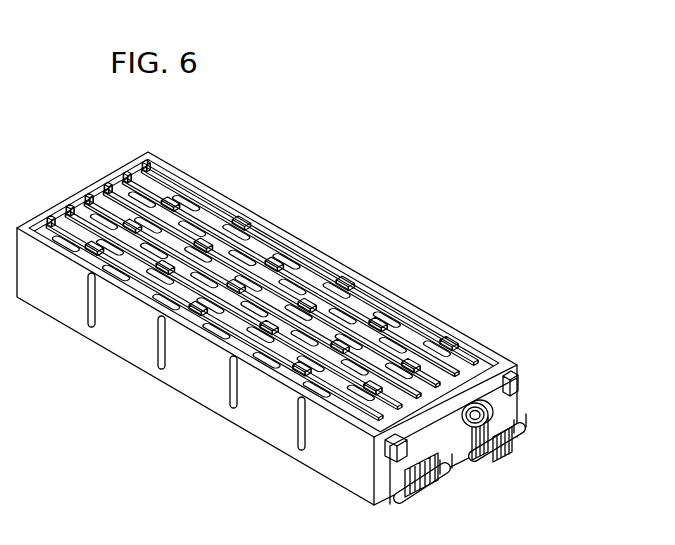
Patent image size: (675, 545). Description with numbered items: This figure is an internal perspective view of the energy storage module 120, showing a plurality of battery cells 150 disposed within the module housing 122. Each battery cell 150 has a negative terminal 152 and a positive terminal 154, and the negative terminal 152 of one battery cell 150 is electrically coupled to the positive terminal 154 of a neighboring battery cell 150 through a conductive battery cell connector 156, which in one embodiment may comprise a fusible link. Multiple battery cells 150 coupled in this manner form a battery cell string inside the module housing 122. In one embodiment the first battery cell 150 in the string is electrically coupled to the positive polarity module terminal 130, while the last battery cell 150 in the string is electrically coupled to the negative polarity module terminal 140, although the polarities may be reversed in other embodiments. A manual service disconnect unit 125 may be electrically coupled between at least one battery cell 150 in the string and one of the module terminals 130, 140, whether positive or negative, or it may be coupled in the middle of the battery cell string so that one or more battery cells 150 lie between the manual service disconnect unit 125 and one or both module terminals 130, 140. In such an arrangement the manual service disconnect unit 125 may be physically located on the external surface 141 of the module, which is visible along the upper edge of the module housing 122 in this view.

The energy storage module 120 is at (322, 158).
The module housing 122 is at (140, 348).
The manual service disconnect unit 125 is at (484, 428).
The positive polarity module terminal 130 is at (397, 450).
The negative polarity module terminal 140 is at (520, 382).
The external surface 141 is at (77, 193).
The battery cell 150 is at (243, 231).
The negative terminal 152 is at (122, 172).
The positive terminal 154 is at (157, 182).
The battery cell connector 156 is at (300, 242).